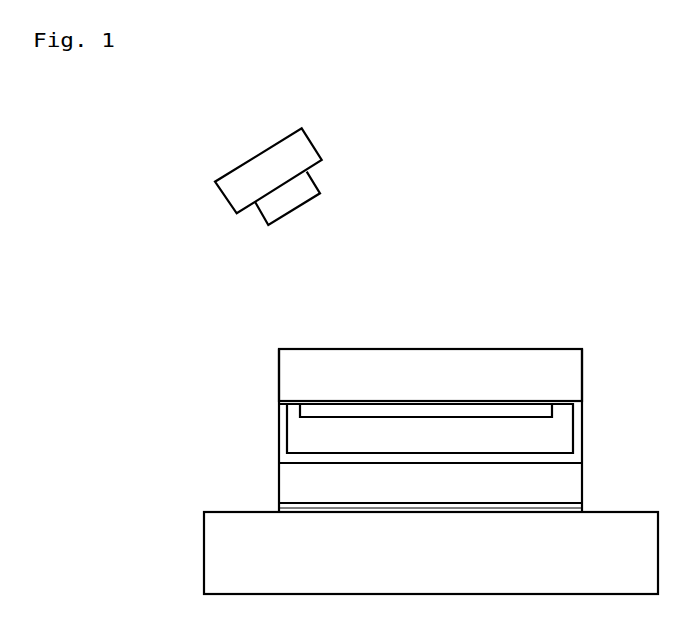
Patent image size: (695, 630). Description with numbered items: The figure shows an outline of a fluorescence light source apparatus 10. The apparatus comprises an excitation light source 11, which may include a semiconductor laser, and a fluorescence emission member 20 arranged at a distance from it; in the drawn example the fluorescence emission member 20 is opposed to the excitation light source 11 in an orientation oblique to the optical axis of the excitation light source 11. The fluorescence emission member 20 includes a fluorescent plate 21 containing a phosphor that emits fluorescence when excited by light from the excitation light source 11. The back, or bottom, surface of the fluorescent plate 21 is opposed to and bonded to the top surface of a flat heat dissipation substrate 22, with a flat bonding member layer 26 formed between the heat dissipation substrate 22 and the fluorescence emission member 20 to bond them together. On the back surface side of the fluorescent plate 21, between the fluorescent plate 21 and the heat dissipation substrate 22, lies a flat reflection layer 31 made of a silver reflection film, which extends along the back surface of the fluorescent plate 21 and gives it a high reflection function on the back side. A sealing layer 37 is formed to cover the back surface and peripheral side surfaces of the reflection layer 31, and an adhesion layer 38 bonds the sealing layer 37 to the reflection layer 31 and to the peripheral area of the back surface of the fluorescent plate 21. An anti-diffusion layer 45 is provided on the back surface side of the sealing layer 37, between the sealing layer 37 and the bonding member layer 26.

The fluorescence light source apparatus 10 is at (140, 156).
The excitation light source 11 is at (305, 152).
The fluorescence emission member 20 is at (272, 430).
The fluorescent plate 21 is at (567, 378).
The heat dissipation substrate 22 is at (218, 542).
The bonding member layer 26 is at (288, 508).
The reflection layer 31 is at (347, 408).
The sealing layer 37 is at (568, 457).
The adhesion layer 38 is at (565, 432).
The anti-diffusion layer 45 is at (565, 483).